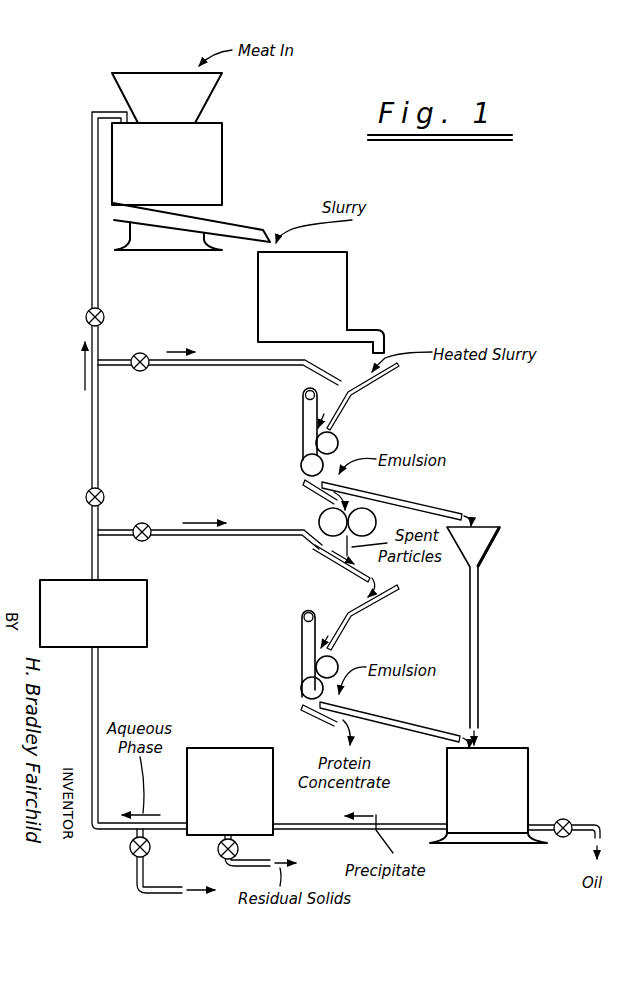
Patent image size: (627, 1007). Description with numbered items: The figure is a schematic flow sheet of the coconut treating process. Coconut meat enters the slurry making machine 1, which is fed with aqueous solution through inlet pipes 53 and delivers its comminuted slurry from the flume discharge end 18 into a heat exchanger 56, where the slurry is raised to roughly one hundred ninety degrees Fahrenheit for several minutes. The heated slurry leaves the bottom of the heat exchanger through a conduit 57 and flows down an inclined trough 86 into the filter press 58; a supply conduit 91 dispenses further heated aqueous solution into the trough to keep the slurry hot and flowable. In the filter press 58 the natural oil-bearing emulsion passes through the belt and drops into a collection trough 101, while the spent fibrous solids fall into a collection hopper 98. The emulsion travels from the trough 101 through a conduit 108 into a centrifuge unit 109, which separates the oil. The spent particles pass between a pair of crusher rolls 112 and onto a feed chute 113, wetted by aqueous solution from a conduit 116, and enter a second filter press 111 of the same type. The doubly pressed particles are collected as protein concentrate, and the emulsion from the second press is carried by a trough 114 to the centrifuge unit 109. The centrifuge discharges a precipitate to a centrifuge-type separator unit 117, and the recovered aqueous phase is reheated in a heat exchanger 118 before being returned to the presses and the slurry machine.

The slurry making machine 1 is at (226, 155).
The discharge end 18 is at (277, 242).
The inlet pipes 53 is at (92, 128).
The heat exchanger 56 is at (347, 284).
The conduit 57 is at (387, 338).
The filter press 58 is at (348, 440).
The trough 86 is at (372, 383).
The supply conduit 91 is at (207, 366).
The collection hopper 98 is at (300, 494).
The collection trough 101 is at (431, 500).
The conduit 108 is at (479, 608).
The centrifuge unit 109 is at (504, 750).
The second filter press 111 is at (294, 650).
The crusher rolls 112 is at (325, 520).
The feed chute 113 is at (318, 568).
The chute 114 is at (400, 713).
The conduit 116 is at (203, 536).
The centrifuge-type separator unit 117 is at (208, 757).
The heat exchanger 118 is at (148, 619).